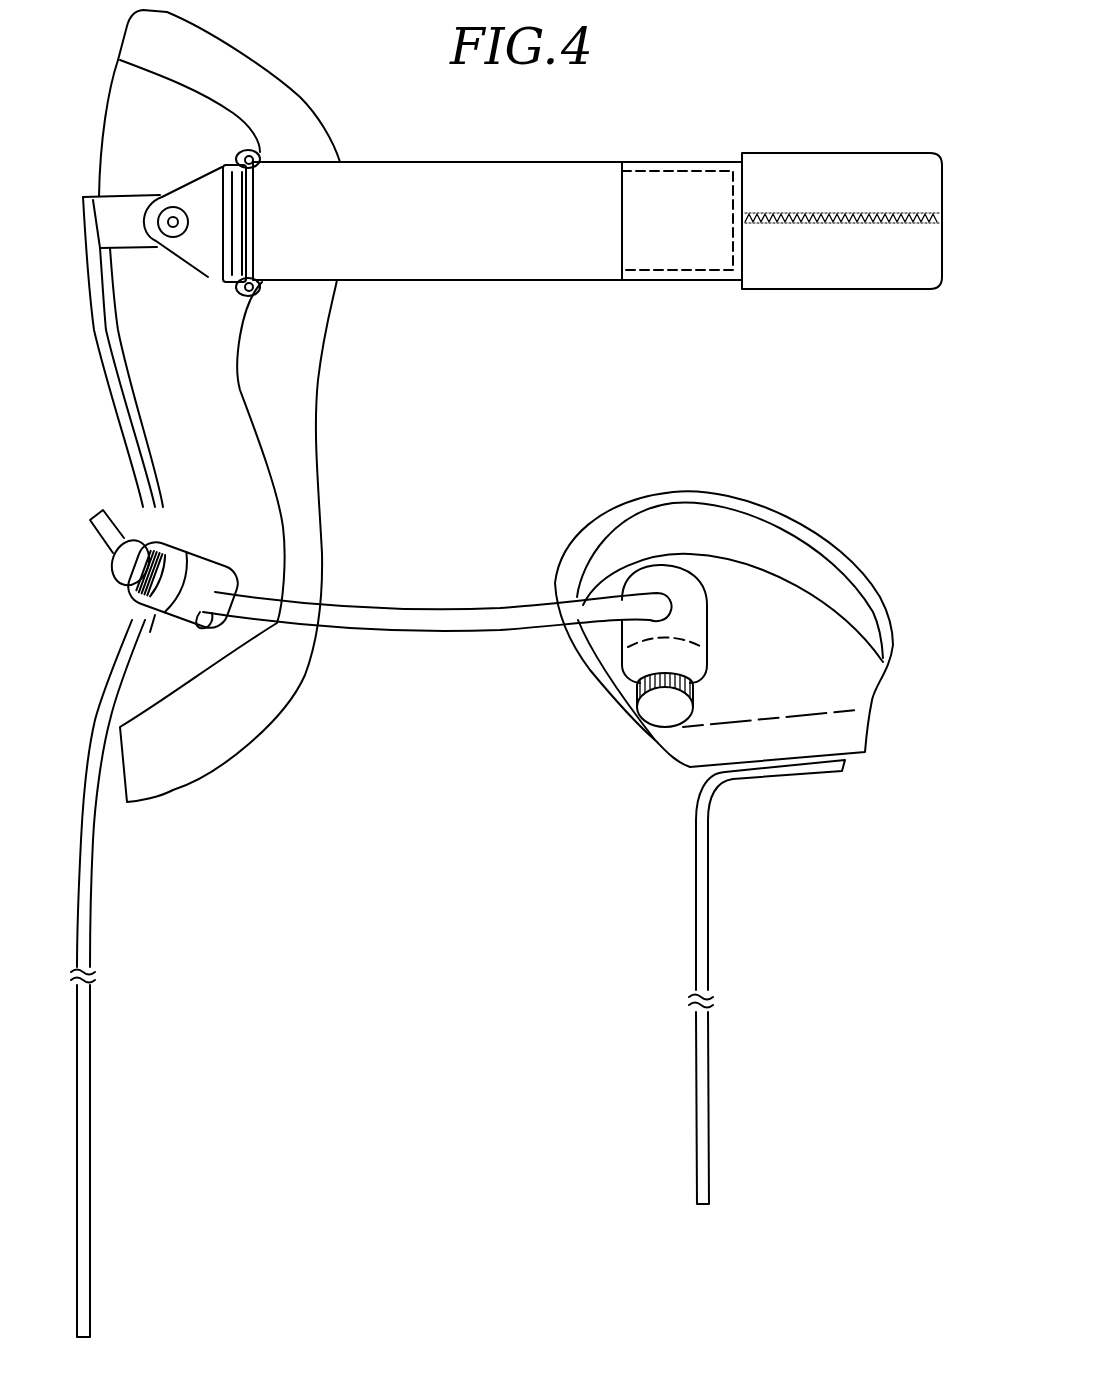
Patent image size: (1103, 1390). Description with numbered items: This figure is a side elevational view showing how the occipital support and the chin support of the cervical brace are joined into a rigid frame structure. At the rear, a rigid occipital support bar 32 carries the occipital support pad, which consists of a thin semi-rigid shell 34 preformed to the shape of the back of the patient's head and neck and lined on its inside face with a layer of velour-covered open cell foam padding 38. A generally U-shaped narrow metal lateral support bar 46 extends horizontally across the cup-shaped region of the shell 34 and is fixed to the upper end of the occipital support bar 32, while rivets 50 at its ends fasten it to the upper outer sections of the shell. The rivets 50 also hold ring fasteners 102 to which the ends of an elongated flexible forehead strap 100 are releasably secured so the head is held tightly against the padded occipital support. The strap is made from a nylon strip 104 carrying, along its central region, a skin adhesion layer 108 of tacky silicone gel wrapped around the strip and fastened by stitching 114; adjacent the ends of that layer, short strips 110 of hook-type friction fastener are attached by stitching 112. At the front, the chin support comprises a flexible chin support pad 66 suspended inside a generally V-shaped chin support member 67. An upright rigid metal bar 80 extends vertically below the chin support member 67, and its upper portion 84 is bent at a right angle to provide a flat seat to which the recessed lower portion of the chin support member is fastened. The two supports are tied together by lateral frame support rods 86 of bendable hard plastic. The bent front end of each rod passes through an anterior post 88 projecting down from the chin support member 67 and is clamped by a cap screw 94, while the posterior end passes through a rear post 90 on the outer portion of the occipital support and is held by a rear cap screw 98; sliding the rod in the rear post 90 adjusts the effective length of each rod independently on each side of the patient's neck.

The occipital support bar 32 is at (140, 450).
The shell 34 is at (177, 393).
The foam padding 38 is at (295, 353).
The lateral support bar 46 is at (123, 208).
The rivets 50 is at (168, 216).
The chin support pad 66 is at (712, 522).
The chin support member 67 is at (820, 640).
The upright bar 80 is at (712, 926).
The upper portion 84 is at (773, 775).
The lateral frame support rods 86 is at (388, 607).
The anterior posts 88 is at (692, 620).
The rear posts 90 is at (203, 560).
The cap screws 94 is at (660, 713).
The rear cap screws 98 is at (130, 573).
The forehead strap 100 is at (512, 166).
The ring fasteners 102 is at (250, 148).
The nylon strip 104 is at (535, 268).
The skin adhesion layer 108 is at (782, 170).
The strips of hook-type friction fastener 110 is at (660, 185).
The stitching 112 is at (692, 272).
The stitching 114 is at (782, 229).